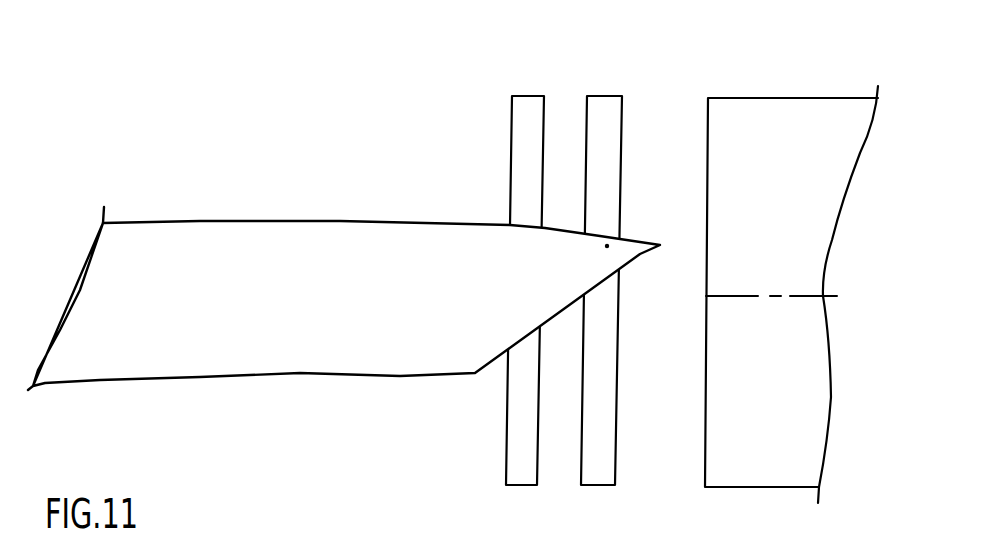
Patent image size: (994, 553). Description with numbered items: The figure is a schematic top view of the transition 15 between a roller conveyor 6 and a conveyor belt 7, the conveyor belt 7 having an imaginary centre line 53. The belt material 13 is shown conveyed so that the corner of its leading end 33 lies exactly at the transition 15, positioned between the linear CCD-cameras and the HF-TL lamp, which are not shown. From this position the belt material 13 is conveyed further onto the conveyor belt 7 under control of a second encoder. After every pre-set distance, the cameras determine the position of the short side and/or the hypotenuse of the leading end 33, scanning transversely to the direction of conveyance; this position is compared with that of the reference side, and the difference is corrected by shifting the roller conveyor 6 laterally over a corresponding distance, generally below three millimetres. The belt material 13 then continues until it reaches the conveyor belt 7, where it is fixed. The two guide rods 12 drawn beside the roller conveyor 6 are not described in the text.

The roller conveyor 6 is at (492, 140).
The conveyor belt 7 is at (785, 118).
The guide rods 12 is at (611, 114).
The belt material 13 is at (268, 260).
The transition 15 is at (662, 115).
The leading end 33 is at (607, 246).
The imaginary centre line 53 is at (758, 296).